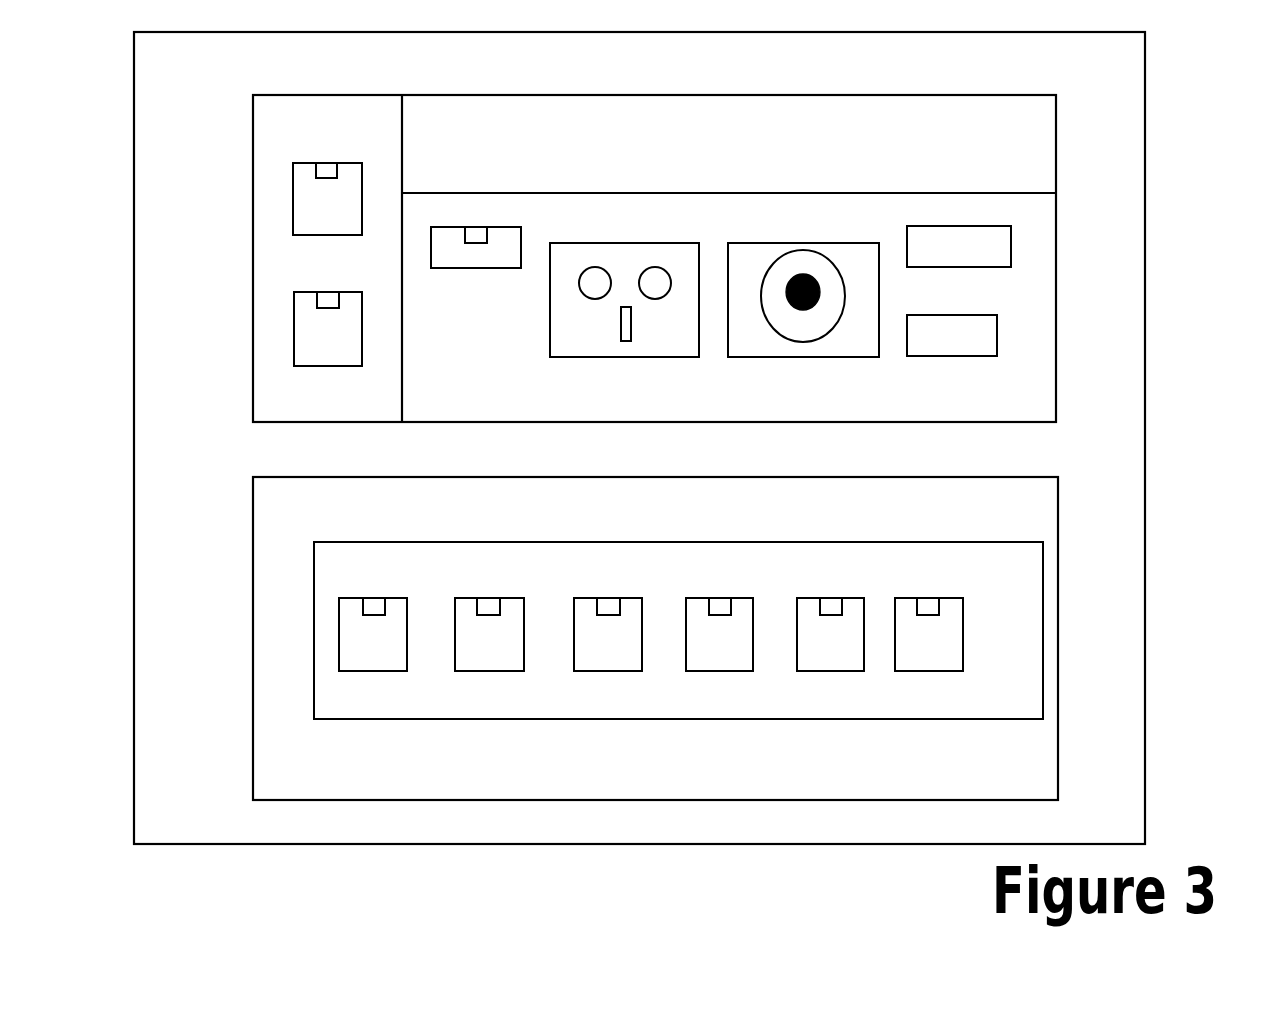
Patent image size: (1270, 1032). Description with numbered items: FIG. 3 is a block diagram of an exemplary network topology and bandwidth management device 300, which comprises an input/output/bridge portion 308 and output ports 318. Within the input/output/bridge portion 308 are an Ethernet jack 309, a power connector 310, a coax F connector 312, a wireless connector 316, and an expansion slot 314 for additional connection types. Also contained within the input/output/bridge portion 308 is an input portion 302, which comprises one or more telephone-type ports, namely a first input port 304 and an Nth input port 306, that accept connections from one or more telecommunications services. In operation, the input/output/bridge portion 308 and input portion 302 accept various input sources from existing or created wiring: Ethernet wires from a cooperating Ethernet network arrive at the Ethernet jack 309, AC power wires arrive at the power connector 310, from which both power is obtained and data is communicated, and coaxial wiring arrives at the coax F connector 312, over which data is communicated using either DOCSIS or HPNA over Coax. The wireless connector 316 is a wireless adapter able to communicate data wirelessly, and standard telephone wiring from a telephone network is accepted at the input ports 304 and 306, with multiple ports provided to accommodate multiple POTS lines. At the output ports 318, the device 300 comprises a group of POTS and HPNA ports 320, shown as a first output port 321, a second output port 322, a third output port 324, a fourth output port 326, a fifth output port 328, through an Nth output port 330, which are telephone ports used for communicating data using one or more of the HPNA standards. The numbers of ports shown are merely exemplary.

The network topology and bandwidth management device 300 is at (1187, 111).
The input portion 302 is at (272, 163).
The RJ-11(1) input port 304 is at (308, 212).
The RJ-11(N) input port 306 is at (312, 316).
The input/output/bridge portion 308 is at (460, 117).
The RJ-45 jack 309 is at (512, 270).
The power connector 310 is at (675, 243).
The coax F connector 312 is at (830, 247).
The expansion slot 314 is at (925, 315).
The wireless connector 316 is at (932, 226).
The output ports 318 is at (788, 492).
The POTS and HPNA ports 320 is at (372, 548).
The RJ-11(1) output port 321 is at (388, 630).
The RJ-11(2) output port 322 is at (523, 647).
The RJ-11(3) output port 324 is at (605, 598).
The RJ-11(4) output port 326 is at (716, 598).
The RJ-11(5) output port 328 is at (829, 598).
The RJ-11(N) output port 330 is at (954, 598).